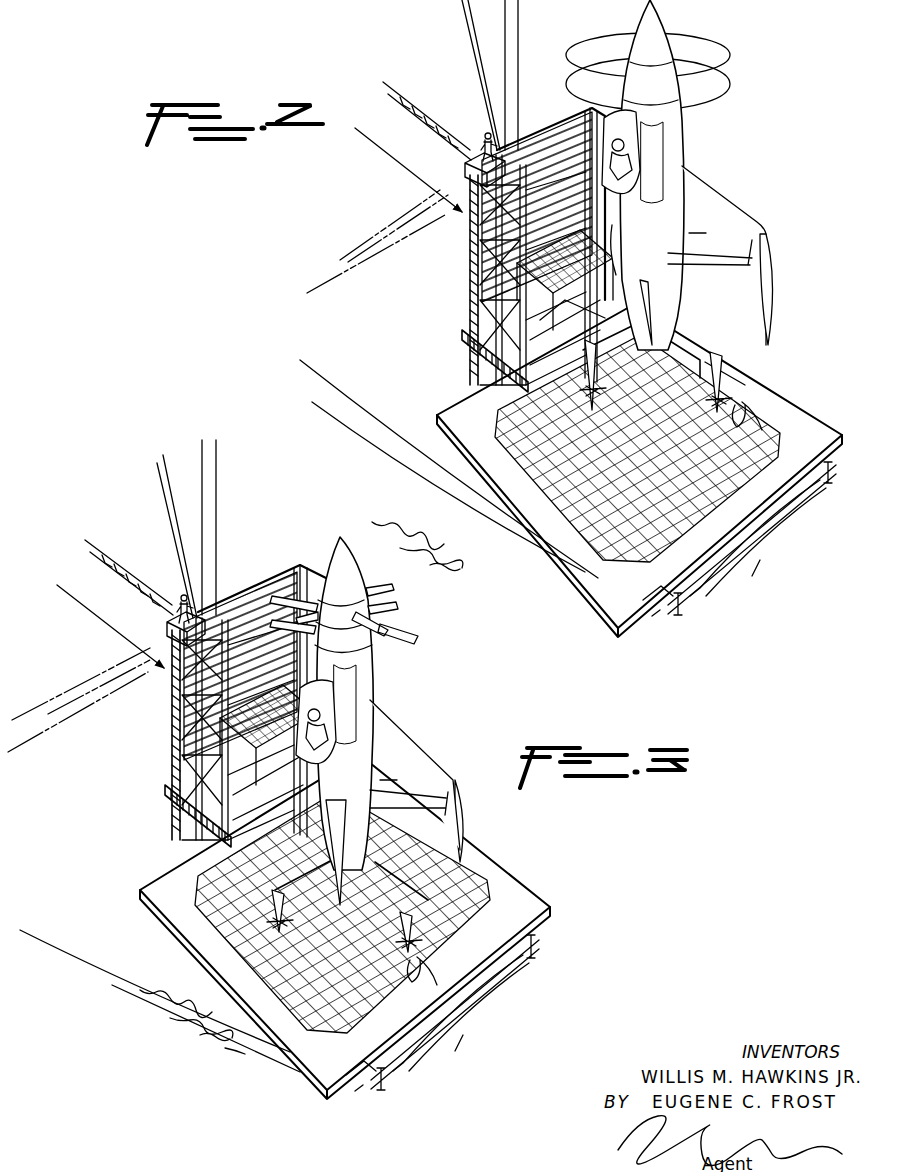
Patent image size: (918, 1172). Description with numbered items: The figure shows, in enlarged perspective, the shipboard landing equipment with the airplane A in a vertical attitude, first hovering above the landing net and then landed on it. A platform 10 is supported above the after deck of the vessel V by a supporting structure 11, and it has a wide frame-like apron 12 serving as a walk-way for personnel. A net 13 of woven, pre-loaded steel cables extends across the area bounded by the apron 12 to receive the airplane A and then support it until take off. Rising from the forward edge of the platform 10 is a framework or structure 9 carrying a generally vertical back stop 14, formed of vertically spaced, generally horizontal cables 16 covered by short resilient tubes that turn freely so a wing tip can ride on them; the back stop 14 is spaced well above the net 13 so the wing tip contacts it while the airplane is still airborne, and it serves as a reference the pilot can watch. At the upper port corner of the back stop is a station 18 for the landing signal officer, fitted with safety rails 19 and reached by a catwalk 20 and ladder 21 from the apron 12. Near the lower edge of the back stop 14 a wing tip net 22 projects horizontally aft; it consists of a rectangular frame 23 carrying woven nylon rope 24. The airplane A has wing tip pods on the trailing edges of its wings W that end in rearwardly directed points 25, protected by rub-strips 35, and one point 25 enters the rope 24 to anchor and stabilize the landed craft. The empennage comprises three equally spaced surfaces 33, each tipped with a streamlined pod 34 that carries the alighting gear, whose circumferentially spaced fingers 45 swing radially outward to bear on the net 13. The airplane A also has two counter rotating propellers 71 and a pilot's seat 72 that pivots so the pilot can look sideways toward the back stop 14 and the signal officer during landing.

In FIG. 2, the framework or structure 9 is at (515, 148).
In FIG. 3, the framework or structure 9 is at (215, 609).
In FIG. 2, the platform 10 is at (639, 484).
In FIG. 3, the platform 10 is at (369, 942).
In FIG. 2, the supporting structure 11 is at (690, 596).
In FIG. 3, the supporting structure 11 is at (542, 931).
In FIG. 2, the apron 12 is at (600, 573).
In FIG. 3, the apron 12 is at (520, 897).
In FIG. 2, the net 13 is at (758, 408).
In FIG. 3, the net 13 is at (474, 901).
In FIG. 2, the back stop 14 is at (502, 196).
In FIG. 3, the back stop 14 is at (229, 643).
In FIG. 2, the cables 16 is at (550, 134).
In FIG. 3, the cables 16 is at (278, 584).
In FIG. 2, the station 18 is at (446, 172).
In FIG. 3, the station 18 is at (162, 682).
In FIG. 2, the safety rails 19 is at (476, 149).
In FIG. 3, the safety rails 19 is at (176, 610).
In FIG. 2, the catwalk 20 is at (478, 362).
In FIG. 3, the catwalk 20 is at (190, 826).
In FIG. 2, the ladder 21 is at (468, 264).
In FIG. 3, the ladder 21 is at (172, 750).
In FIG. 2, the wing tip net 22 is at (510, 282).
In FIG. 3, the wing tip net 22 is at (268, 746).
In FIG. 2, the rectangular frame 23 is at (554, 319).
In FIG. 3, the rectangular frame 23 is at (266, 782).
In FIG. 2, the rope 24 is at (589, 270).
In FIG. 3, the rope 24 is at (314, 748).
In FIG. 2, the points 25 is at (619, 230).
In FIG. 3, the points 25 is at (464, 860).
In FIG. 2, the empennage surfaces 33 is at (712, 332).
In FIG. 3, the empennage surfaces 33 is at (311, 890).
In FIG. 2, the streamlined pod 34 is at (720, 390).
In FIG. 3, the streamlined pod 34 is at (266, 905).
In FIG. 2, the rub-strips 35 is at (770, 280).
In FIG. 3, the rub-strips 35 is at (204, 719).
In FIG. 2, the fingers 45 is at (738, 424).
In FIG. 3, the fingers 45 is at (410, 970).
In FIG. 3, the counter rotating propellers 71 is at (400, 632).
In FIG. 2, the pilot's seat 72 is at (629, 179).
In FIG. 3, the pilot's seat 72 is at (324, 721).
In FIG. 2, the airplane A is at (690, 206).
In FIG. 3, the airplane A is at (335, 744).
In FIG. 2, the wings W is at (717, 255).
In FIG. 3, the wings W is at (415, 775).
In FIG. 2, the vessel V is at (421, 468).
In FIG. 3, the vessel V is at (144, 981).